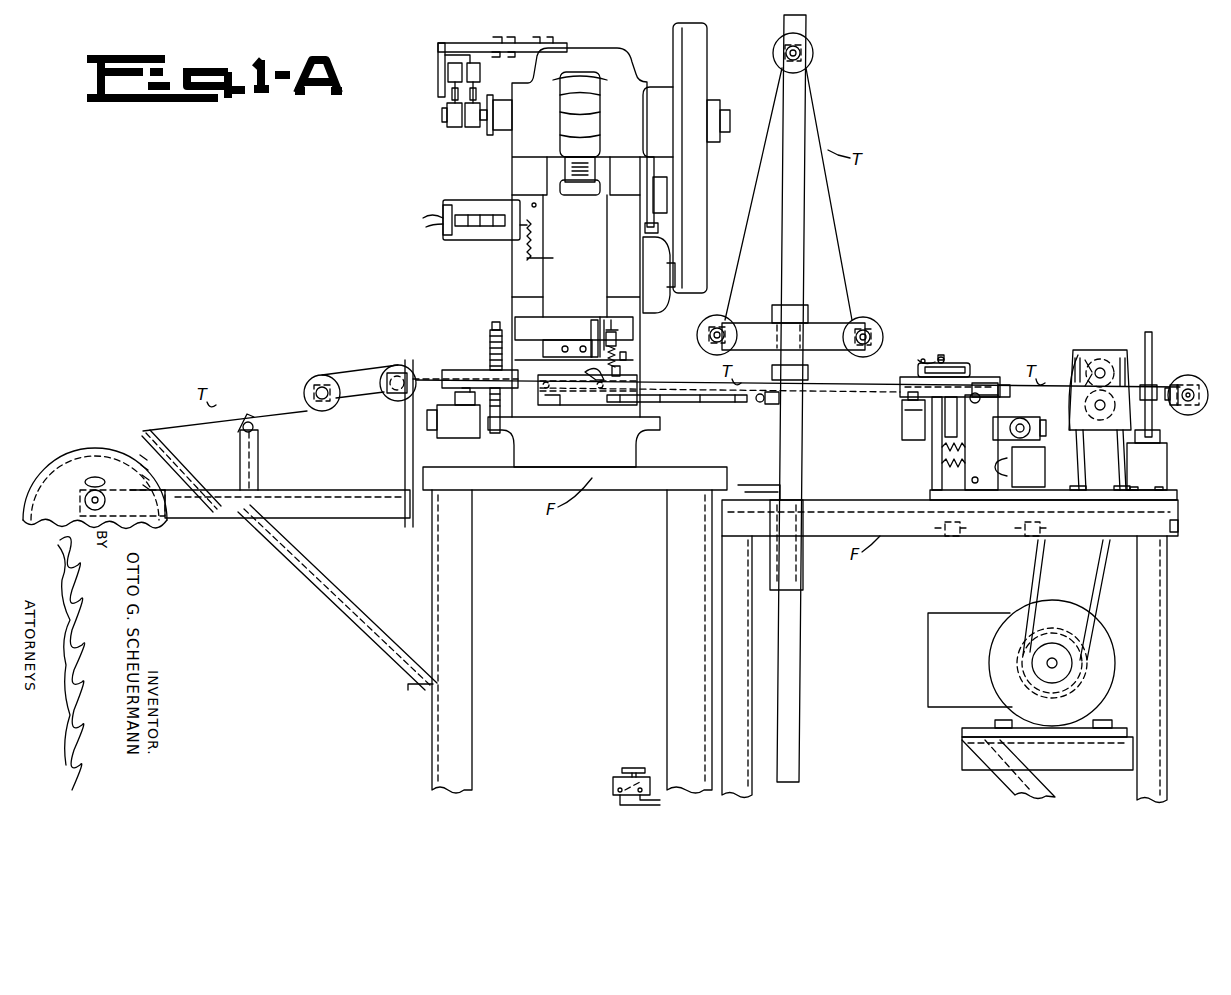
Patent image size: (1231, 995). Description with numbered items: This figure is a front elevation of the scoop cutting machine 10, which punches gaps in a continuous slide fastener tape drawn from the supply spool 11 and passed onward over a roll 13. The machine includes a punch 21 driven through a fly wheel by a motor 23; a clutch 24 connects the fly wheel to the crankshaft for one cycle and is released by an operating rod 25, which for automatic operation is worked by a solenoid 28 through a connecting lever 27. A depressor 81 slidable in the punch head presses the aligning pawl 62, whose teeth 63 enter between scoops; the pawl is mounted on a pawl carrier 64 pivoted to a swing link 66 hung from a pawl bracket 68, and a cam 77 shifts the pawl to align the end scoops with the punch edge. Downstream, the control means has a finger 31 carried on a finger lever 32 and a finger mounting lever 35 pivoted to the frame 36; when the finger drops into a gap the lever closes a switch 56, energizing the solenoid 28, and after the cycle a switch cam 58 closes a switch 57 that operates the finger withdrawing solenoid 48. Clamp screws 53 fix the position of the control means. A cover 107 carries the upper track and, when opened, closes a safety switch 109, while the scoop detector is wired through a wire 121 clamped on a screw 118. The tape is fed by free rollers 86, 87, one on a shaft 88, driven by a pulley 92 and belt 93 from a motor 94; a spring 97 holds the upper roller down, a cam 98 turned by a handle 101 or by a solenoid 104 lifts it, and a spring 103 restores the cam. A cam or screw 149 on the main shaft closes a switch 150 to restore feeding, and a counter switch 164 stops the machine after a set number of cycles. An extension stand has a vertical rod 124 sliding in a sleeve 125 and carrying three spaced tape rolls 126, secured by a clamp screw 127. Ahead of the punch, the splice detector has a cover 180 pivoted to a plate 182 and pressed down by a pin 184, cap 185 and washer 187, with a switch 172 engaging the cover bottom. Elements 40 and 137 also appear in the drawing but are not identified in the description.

The scoop cutting machine 10 is at (372, 240).
The supply spool 11 is at (73, 435).
The roll 13 is at (1192, 375).
The punch 21 is at (572, 357).
The motor 23 is at (668, 300).
The clutch 24 is at (660, 87).
The operating rod 25 is at (647, 203).
The connecting lever 27 is at (645, 238).
The solenoid 28 is at (667, 180).
The finger 31 is at (975, 358).
The finger lever 32 is at (980, 383).
The finger mounting lever 35 is at (1004, 385).
The frame 36 is at (932, 478).
The slide rod 40 is at (935, 440).
The finger withdrawing solenoid 48 is at (1020, 467).
The clamp screws 53 is at (1032, 536).
The switch 56 is at (1028, 422).
The switch 57 is at (470, 43).
The switch cam 58 is at (474, 127).
The aligning pawl 62 is at (575, 395).
The teeth 63 is at (562, 404).
The pawl carrier 64 is at (590, 380).
The swing link 66 is at (618, 340).
The pawl bracket 68 is at (626, 355).
The cam 77 is at (601, 318).
The depressor 81 is at (593, 322).
The feed roller 86 is at (1102, 360).
The feed roller 87 is at (1100, 420).
The shaft 88 is at (1108, 360).
The pulley 92 is at (1088, 360).
The belt 93 is at (1094, 572).
The motor 94 is at (1022, 615).
The spring 97 is at (1142, 430).
The cam 98 is at (1174, 385).
The handle 101 is at (1152, 335).
The spring 103 is at (1076, 372).
The solenoid 104 is at (1138, 476).
The cover 107 is at (906, 378).
The switch 109 is at (902, 437).
The screw 118 is at (942, 355).
The wire 121 is at (921, 358).
The vertical rod 124 is at (792, 631).
The sleeve 125 is at (780, 458).
The tape rolls 126 is at (813, 55).
The clamp screw 127 is at (762, 403).
The switch 137 is at (613, 785).
The cam or screw 149 is at (452, 127).
The switch 150 is at (448, 75).
The counter switch 164 is at (484, 240).
The switch 172 is at (457, 428).
The cover 180 is at (446, 370).
The plate 182 is at (438, 377).
The pin 184 is at (492, 328).
The cap 185 is at (496, 330).
The washer 187 is at (493, 388).